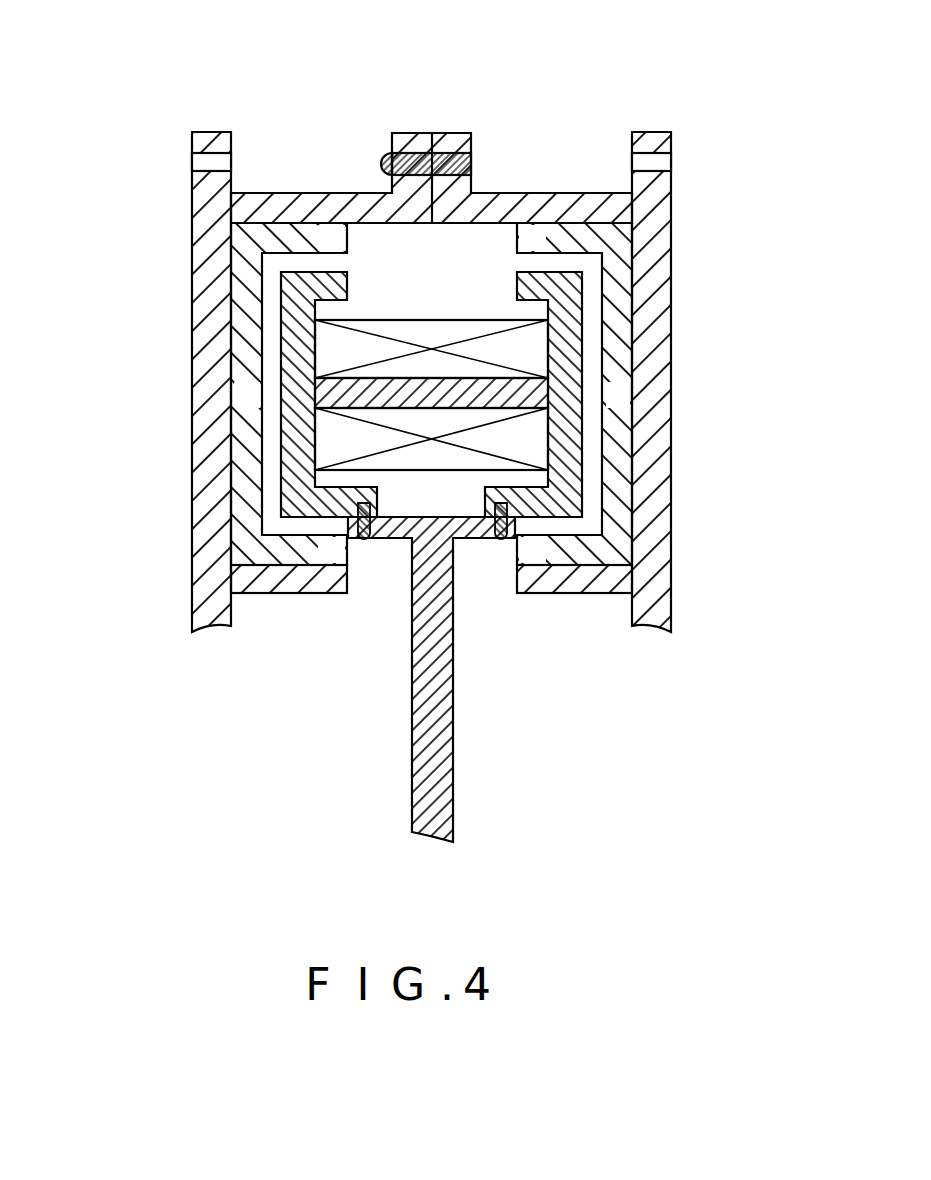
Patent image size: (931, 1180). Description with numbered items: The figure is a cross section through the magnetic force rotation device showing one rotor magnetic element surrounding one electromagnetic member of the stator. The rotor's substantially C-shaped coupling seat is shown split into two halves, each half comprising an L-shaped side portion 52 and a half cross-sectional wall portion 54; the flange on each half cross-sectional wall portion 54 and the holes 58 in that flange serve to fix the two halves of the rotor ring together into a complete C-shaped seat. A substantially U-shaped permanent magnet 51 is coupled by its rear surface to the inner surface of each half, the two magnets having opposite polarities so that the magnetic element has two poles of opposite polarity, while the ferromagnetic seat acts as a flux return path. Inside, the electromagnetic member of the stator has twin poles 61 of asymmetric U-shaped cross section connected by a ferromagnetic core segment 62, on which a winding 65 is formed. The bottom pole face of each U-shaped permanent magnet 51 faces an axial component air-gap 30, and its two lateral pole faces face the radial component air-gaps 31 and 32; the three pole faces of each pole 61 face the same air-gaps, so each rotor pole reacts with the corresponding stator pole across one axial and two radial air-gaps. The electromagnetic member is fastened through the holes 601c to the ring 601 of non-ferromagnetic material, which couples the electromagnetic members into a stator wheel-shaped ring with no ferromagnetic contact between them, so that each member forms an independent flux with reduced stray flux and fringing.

The axial component air-gap 30 is at (273, 368).
The radial component air-gap 31 is at (293, 258).
The radial component air-gap 32 is at (308, 527).
The U-shaped permanent magnet 51 is at (618, 323).
The L-shaped side portion 52 is at (660, 257).
The half cross-sectional wall portion 54 is at (548, 203).
The holes 58 is at (447, 157).
The twin poles 61 is at (335, 283).
The core segment 62 is at (480, 390).
The winding 65 is at (412, 345).
The ring 601 is at (432, 640).
The holes 601c is at (497, 556).